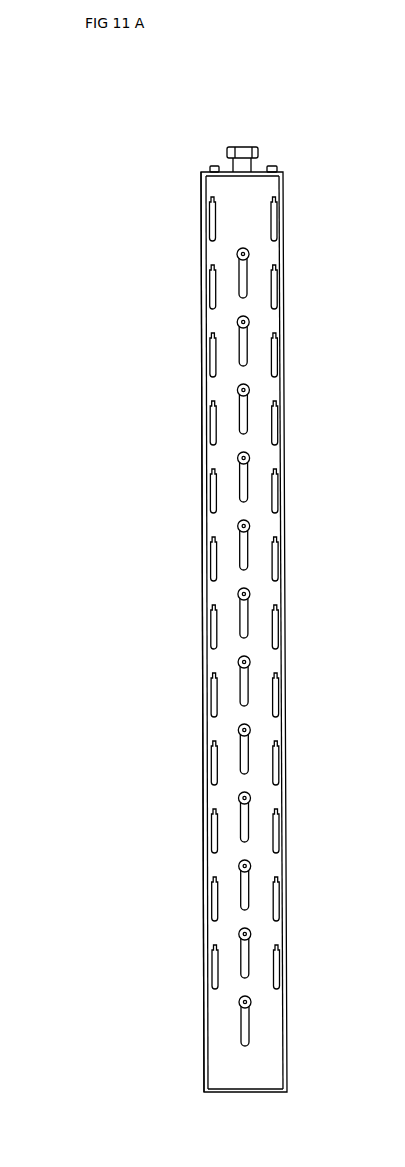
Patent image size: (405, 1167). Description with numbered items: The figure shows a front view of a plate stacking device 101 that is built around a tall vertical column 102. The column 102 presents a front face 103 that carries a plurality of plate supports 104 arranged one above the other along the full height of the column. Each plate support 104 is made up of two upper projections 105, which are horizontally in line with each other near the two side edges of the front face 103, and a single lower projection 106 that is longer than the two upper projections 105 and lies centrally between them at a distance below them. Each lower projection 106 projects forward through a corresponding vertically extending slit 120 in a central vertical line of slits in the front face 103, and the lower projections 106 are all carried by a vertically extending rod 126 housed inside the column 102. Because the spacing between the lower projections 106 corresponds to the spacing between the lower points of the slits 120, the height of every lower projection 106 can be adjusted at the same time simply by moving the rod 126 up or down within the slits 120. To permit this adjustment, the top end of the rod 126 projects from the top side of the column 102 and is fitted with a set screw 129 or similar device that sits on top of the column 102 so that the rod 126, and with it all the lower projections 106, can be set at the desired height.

The plate stacking device 101 is at (204, 604).
The vertical column 102 is at (288, 629).
The front face 103 is at (142, 632).
The plate support 104 is at (138, 632).
The upper projection 105 is at (176, 593).
The lower projection 106 is at (161, 762).
The vertical slit 120 is at (224, 647).
The rod 126 is at (306, 404).
The set screw 129 is at (301, 144).